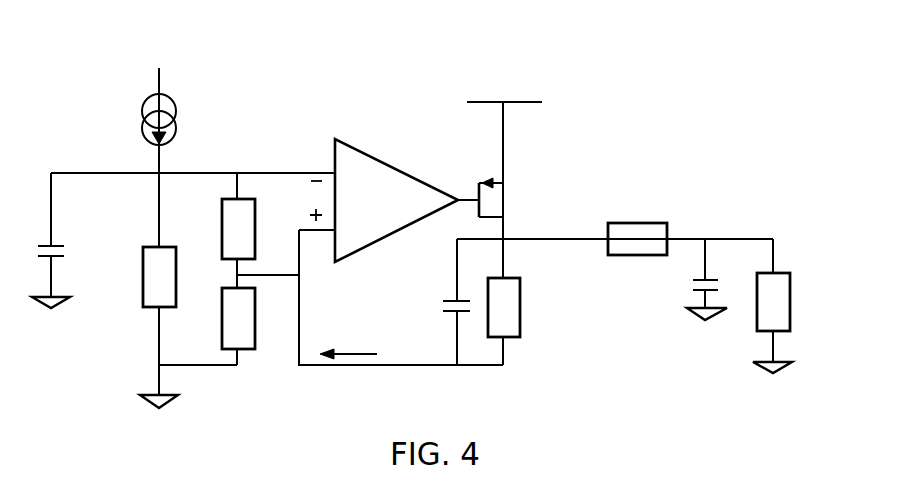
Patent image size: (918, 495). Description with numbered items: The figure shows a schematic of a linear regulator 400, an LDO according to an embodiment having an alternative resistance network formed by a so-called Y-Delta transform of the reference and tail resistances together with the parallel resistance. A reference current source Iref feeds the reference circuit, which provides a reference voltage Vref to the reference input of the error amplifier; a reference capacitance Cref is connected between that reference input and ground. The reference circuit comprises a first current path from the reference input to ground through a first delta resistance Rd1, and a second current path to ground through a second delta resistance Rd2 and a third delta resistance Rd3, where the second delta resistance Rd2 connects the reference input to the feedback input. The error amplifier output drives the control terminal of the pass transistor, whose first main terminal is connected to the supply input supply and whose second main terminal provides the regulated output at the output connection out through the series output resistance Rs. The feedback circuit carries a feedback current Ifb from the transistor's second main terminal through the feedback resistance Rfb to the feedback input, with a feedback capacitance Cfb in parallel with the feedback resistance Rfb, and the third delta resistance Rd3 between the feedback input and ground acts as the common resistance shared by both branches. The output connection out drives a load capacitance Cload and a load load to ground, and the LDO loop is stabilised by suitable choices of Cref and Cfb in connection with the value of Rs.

The linear regulator 400 is at (136, 33).
The reference current source Iref is at (175, 157).
The reference capacitance Cref is at (70, 240).
The first delta resistance Rd1 is at (138, 327).
The second delta resistance Rd2 is at (216, 230).
The third delta resistance Rd3 is at (216, 326).
The reference voltage Vref is at (286, 155).
The supply input supply is at (504, 126).
The feedback capacitance Cfb is at (436, 302).
The feedback resistance Rfb is at (523, 321).
The feedback current Ifb is at (348, 373).
The output resistance Rs is at (637, 239).
The output connection out is at (720, 226).
The load capacitance Cload is at (677, 279).
The element load is at (795, 306).